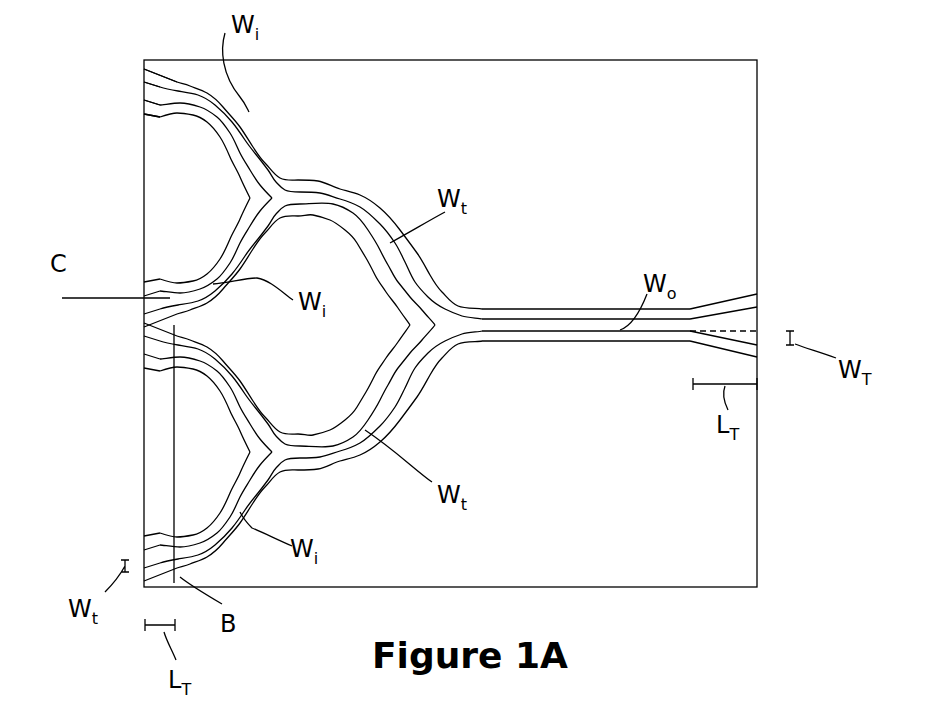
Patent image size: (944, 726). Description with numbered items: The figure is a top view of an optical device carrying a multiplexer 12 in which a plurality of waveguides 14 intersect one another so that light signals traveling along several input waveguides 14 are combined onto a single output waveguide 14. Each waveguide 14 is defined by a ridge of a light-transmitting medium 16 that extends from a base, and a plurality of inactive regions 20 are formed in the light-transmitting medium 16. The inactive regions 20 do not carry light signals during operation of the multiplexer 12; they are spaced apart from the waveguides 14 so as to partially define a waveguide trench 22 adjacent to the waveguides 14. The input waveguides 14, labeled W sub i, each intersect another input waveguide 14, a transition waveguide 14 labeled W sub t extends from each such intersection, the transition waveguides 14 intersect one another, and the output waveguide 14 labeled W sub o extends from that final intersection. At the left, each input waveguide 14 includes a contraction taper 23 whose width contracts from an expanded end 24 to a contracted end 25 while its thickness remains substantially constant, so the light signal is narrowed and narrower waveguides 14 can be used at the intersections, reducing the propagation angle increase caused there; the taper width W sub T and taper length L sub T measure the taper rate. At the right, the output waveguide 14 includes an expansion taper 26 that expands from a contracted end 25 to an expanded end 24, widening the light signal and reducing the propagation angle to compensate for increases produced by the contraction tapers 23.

The multiplexer 12 is at (515, 224).
The waveguide 14 is at (305, 189).
The light-transmitting medium 16 is at (572, 323).
The inactive region 20 is at (170, 204).
The waveguide trench 22 is at (243, 118).
The contraction taper 23 is at (160, 78).
The expanded end 24 is at (158, 99).
The contracted end 25 is at (177, 97).
The expansion taper 26 is at (753, 307).